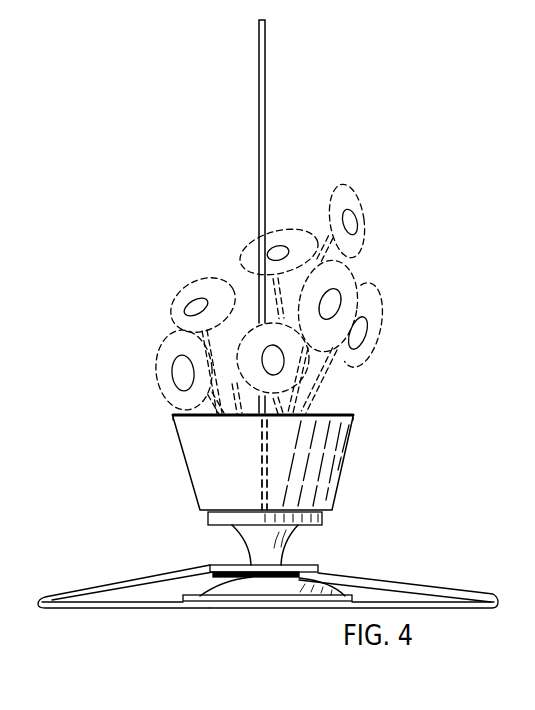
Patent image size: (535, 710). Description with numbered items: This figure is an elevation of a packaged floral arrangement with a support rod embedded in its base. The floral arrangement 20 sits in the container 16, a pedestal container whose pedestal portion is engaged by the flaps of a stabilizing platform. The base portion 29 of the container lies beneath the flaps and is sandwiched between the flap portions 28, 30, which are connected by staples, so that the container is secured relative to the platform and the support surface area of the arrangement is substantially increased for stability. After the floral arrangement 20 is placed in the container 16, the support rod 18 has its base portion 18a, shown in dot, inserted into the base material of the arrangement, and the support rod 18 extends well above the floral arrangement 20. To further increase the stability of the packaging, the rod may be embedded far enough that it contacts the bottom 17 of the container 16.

The container 16 is at (332, 463).
The bottom of the container 17 is at (324, 518).
The support rod 18 is at (266, 154).
The base portion of the support rod 18a is at (265, 435).
The floral arrangement 20 is at (371, 259).
The flap portion 28 is at (117, 585).
The base portion of the container 29 is at (249, 598).
The flap portion 30 is at (366, 585).